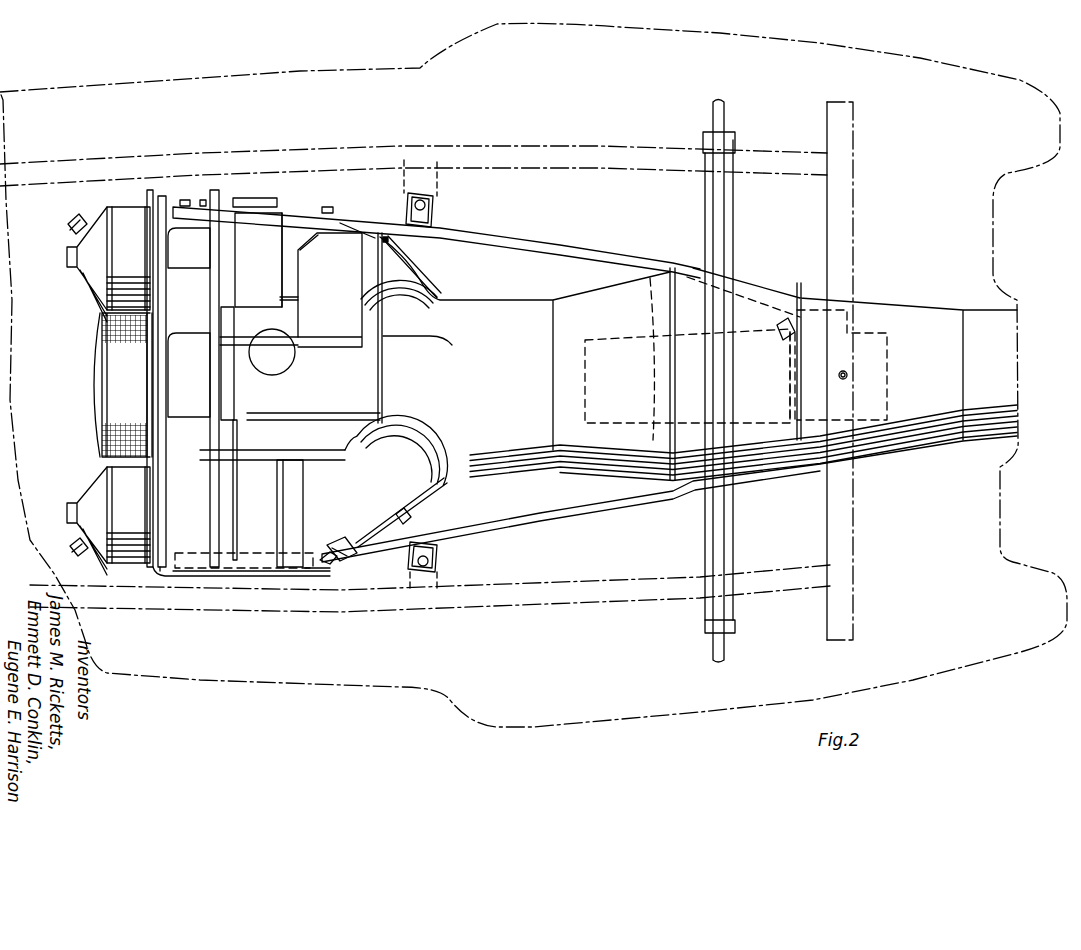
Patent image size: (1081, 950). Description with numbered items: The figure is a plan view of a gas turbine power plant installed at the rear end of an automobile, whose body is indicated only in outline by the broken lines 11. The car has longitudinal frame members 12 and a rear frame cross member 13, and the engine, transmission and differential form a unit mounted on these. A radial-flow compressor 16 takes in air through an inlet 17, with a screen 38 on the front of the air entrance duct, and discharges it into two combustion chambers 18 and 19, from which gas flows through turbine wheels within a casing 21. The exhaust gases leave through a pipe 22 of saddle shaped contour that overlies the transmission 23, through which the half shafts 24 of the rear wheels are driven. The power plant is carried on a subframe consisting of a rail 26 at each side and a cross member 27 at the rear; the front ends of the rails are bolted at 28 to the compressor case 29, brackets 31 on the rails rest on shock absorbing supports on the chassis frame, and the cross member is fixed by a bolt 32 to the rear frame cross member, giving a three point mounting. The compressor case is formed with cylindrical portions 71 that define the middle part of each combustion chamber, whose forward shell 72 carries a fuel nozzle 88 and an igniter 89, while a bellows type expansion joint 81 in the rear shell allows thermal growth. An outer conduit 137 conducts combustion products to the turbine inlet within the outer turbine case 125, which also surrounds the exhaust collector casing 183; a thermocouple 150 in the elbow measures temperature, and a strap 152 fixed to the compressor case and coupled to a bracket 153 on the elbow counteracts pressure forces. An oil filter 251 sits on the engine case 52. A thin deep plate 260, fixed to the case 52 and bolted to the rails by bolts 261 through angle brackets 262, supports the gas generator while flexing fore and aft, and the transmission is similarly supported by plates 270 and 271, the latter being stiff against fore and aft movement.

The broken lines 11 is at (250, 70).
The longitudinal frame members 12 is at (483, 140).
The rear frame cross member 13 is at (855, 138).
The radial-flow compressor 16 is at (175, 380).
The inlet 17 is at (88, 345).
The combustion chamber 18 is at (245, 580).
The combustion chamber 19 is at (255, 201).
The casing 21 is at (543, 445).
The exhaust pipe 22 is at (880, 298).
The transmission 23 is at (640, 335).
The half shafts 24 is at (722, 640).
The rails 26 is at (548, 245).
The cross member 27 is at (855, 345).
The bolts 28 is at (190, 200).
The compressor case 29 is at (175, 573).
The brackets 31 is at (437, 215).
The bolt 32 is at (850, 375).
The screen 38 is at (118, 420).
The engine case 52 is at (360, 381).
The cylindrical portions 71 is at (170, 200).
The forward shell 72 is at (100, 287).
The bellows type expansion joint 81 is at (285, 568).
The fuel nozzle 88 is at (66, 258).
The igniter 89 is at (68, 228).
The outer turbine case 125 is at (502, 302).
The outer conduit 137 is at (413, 259).
The thermocouple 150 is at (413, 516).
The strap 152 is at (300, 572).
The bracket 153 is at (350, 556).
The exhaust collector casing 183 is at (672, 266).
The oil filter 251 is at (338, 250).
The plate 260 is at (387, 337).
The bolts 261 is at (399, 295).
The angle brackets 262 is at (362, 237).
The plate 270 is at (687, 376).
The plate 271 is at (783, 355).